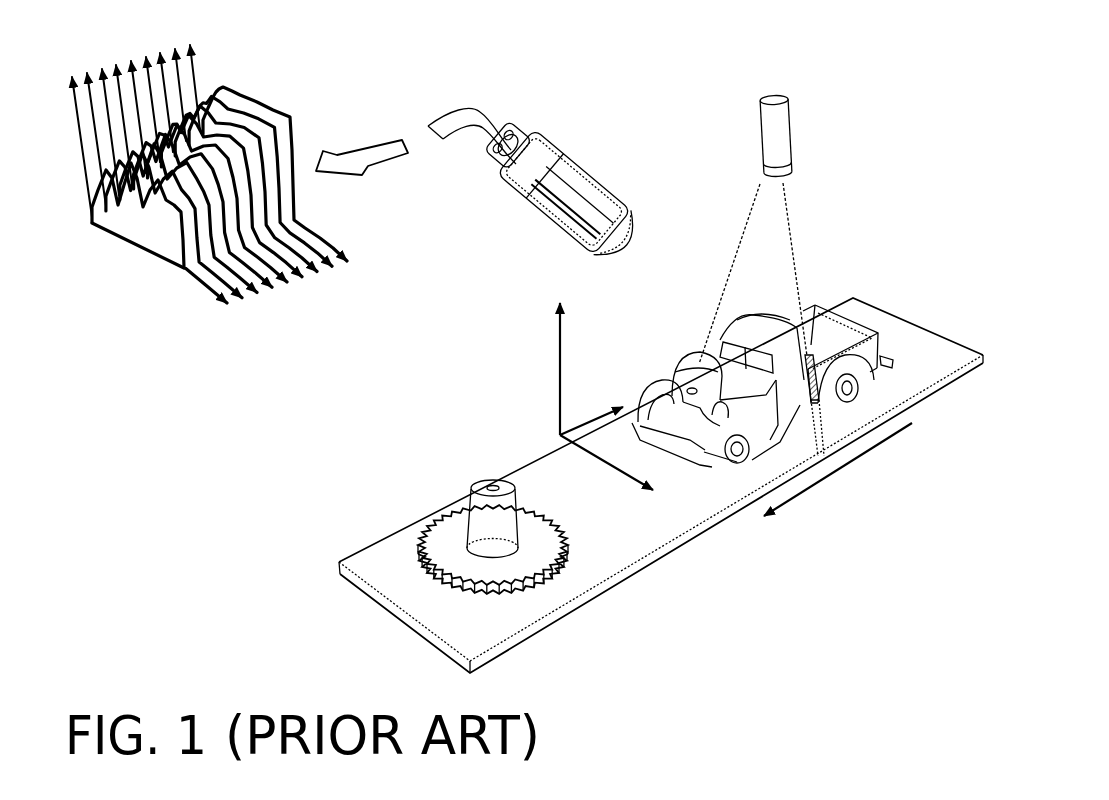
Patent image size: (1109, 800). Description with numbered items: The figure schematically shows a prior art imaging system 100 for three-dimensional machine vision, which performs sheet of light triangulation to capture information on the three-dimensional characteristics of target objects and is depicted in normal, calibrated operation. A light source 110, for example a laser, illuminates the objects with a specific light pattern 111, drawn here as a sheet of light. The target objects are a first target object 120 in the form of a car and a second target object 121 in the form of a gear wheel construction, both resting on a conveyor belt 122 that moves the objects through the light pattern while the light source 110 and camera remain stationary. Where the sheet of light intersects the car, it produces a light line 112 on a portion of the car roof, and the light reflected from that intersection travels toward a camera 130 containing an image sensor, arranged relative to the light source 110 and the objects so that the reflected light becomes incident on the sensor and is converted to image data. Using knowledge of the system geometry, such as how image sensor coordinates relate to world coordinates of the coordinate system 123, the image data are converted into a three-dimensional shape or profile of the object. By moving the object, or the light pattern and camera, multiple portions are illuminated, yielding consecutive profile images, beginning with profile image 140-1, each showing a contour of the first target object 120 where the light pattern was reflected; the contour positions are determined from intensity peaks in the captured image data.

The imaging system 100 is at (892, 66).
The light source 110 is at (792, 124).
The specific light pattern 111 is at (753, 273).
The light line 112 is at (752, 345).
The first target object 120 is at (676, 378).
The second target object 121 is at (484, 487).
The conveyor belt 122 is at (625, 582).
The coordinate system 123 is at (557, 376).
The camera 130 is at (573, 152).
The profile image 140-1 is at (149, 308).